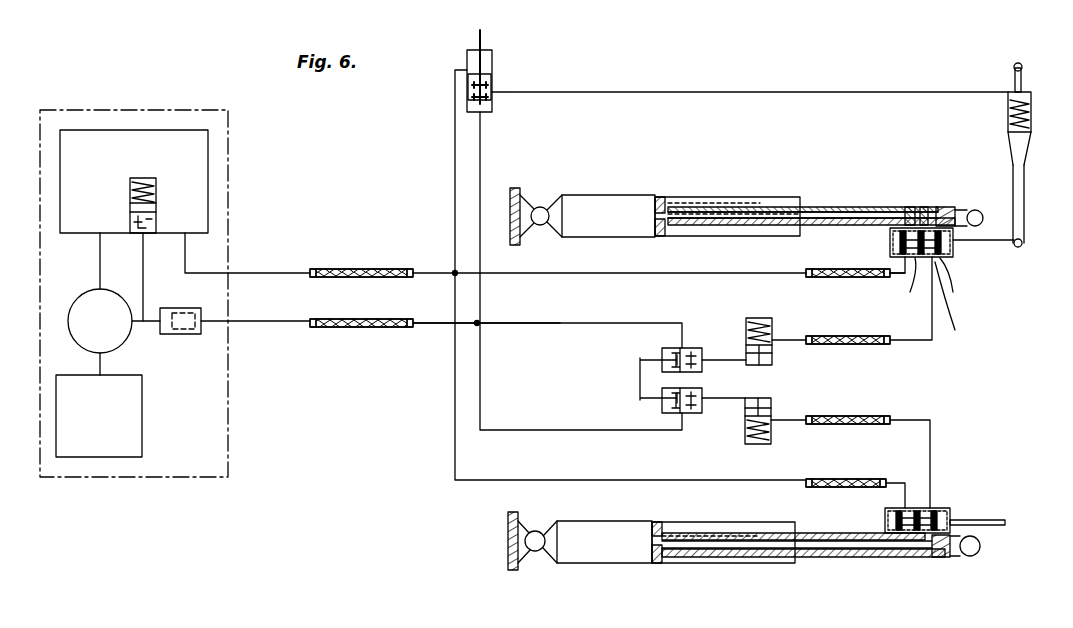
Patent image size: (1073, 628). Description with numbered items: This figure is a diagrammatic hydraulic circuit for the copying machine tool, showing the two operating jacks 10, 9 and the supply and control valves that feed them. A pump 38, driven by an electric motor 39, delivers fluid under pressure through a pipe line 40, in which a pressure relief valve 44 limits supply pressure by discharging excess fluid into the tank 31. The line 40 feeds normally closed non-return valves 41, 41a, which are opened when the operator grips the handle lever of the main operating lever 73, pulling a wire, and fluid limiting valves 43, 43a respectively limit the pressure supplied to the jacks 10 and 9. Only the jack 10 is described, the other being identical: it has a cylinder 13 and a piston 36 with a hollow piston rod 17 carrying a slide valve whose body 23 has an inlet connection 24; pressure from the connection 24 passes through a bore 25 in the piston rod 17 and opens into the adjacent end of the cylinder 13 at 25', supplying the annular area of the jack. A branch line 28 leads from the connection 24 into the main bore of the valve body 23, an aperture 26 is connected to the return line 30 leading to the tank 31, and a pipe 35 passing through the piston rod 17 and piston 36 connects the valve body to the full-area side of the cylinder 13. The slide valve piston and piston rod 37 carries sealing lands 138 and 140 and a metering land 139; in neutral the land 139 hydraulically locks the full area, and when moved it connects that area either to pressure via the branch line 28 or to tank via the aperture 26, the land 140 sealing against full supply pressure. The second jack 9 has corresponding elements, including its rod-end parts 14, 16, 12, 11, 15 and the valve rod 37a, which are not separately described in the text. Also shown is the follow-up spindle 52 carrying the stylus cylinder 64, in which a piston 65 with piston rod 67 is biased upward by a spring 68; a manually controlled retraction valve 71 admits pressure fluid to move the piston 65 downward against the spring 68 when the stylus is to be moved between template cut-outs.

The tank 31 is at (148, 140).
The pressure relief valve 44 is at (156, 198).
The pump 38 is at (100, 321).
The electric motor 39 is at (108, 412).
The retraction valve 71 is at (492, 63).
The pivot mounting 14 is at (534, 205).
The cylinder 13 is at (596, 194).
The jack 10 is at (640, 206).
The piston 36 is at (668, 202).
The bore 25 is at (803, 185).
The bore opening 25' is at (711, 361).
The pipe 35 is at (770, 225).
The hollow piston rod 17 is at (824, 228).
The sealing land 138 is at (910, 226).
The branch line 28 is at (925, 226).
The aperture 26 is at (947, 212).
The rod end 16 is at (978, 216).
The piston rod 67 is at (1012, 72).
The piston 65 is at (1032, 108).
The spring 68 is at (1008, 116).
The cylinder 64 is at (1030, 137).
The spindle 52 is at (1025, 182).
The piston and piston rod 37 is at (990, 246).
The valve body 23 is at (951, 252).
The return line 30 is at (900, 284).
The metering land 139 is at (914, 287).
The sealing land 140 is at (962, 286).
The inlet connection 24 is at (958, 305).
The pipe line 40 is at (578, 330).
The non-return valve 41 is at (700, 350).
The non-return valve 41a is at (694, 415).
The main operating lever 73 is at (640, 384).
The fluid limiting valve 43 is at (764, 318).
The fluid limiting valve 43a is at (772, 434).
The jack 9 is at (600, 526).
The pivot mounting 12 is at (526, 548).
The actuator housing 11 is at (632, 560).
The piston rod 15 is at (812, 532).
The link 37a is at (970, 520).